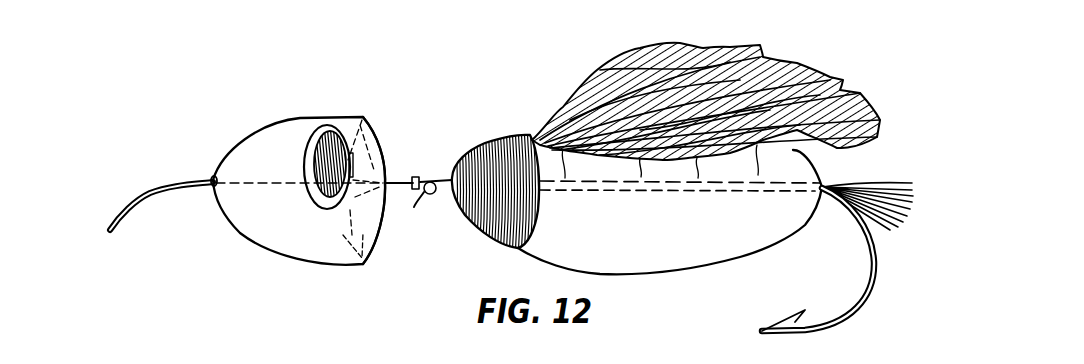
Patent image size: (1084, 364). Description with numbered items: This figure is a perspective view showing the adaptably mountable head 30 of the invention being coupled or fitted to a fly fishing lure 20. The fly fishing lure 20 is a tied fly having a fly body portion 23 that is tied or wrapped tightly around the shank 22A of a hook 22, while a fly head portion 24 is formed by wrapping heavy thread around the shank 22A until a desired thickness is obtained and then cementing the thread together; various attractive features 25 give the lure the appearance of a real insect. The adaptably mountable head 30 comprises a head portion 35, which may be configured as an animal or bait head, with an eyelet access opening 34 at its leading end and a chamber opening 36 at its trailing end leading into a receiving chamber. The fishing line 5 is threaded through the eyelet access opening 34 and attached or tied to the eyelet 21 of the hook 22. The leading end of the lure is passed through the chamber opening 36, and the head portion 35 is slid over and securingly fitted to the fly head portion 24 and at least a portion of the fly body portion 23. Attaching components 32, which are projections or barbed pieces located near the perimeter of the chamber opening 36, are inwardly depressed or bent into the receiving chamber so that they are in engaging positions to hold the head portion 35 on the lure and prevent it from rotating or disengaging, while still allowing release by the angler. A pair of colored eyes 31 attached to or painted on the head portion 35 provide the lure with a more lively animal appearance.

The fishing line 5 is at (145, 190).
The fly fishing lure 20 is at (803, 53).
The eyelet 21 is at (433, 200).
The hook 22 is at (832, 203).
The shank 22A is at (583, 190).
The fly body portion 23 is at (682, 255).
The head portion 24 is at (497, 150).
The attractive features 25 is at (703, 63).
The adaptably mountable head 30 is at (282, 100).
The colored eyes 31 is at (330, 133).
The attaching components 32 is at (396, 170).
The eyelet access opening 34 is at (210, 190).
The head portion 35 is at (247, 153).
The chamber opening 36 is at (390, 227).